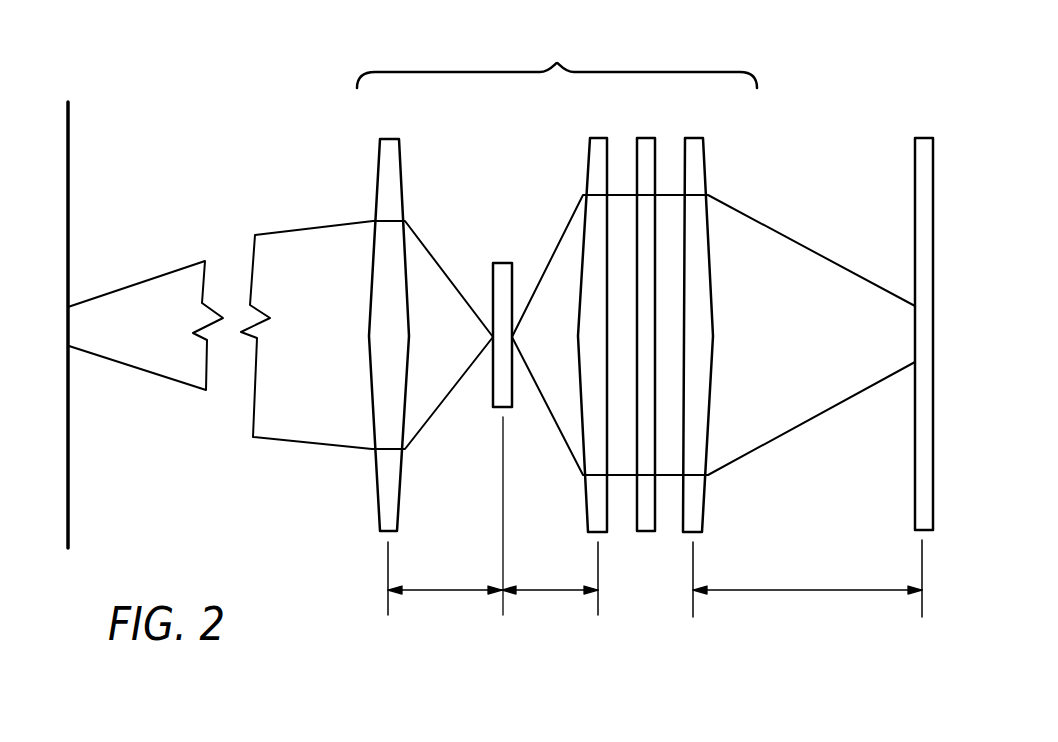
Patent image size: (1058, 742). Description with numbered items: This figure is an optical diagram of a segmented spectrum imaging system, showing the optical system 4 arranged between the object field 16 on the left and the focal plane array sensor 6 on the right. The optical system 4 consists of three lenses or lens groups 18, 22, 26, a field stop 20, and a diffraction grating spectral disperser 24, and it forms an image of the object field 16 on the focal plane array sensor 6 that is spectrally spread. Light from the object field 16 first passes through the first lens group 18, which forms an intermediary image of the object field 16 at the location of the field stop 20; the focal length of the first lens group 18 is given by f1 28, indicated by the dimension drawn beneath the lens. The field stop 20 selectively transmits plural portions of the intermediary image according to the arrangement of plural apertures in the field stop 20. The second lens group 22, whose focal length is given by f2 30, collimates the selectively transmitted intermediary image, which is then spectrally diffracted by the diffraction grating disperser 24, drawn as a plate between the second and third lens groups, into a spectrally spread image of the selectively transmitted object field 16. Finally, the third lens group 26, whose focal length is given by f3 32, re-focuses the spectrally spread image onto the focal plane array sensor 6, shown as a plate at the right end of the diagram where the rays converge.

The optical system 4 is at (567, 58).
The focal plane array sensor 6 is at (915, 187).
The object field 16 is at (68, 187).
The first lens group 18 is at (400, 172).
The field stop 20 is at (501, 262).
The second lens group 22 is at (588, 165).
The diffraction grating spectral disperser 24 is at (635, 157).
The third lens group 26 is at (685, 157).
The focal length f1 28 is at (447, 590).
The focal length f2 30 is at (551, 590).
The focal length f3 32 is at (823, 590).